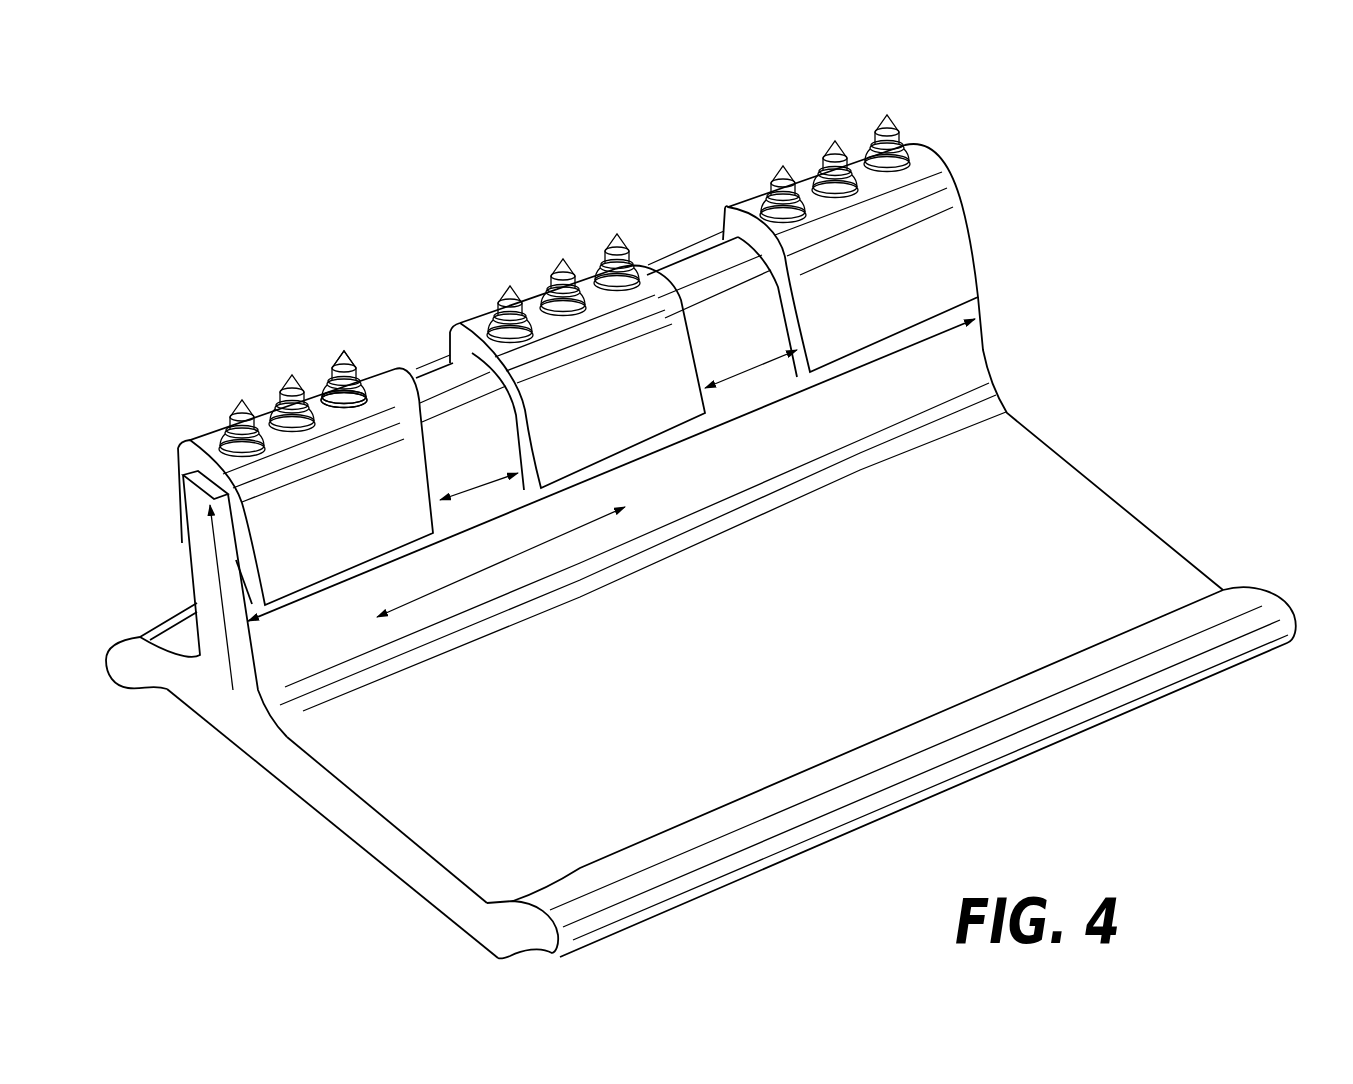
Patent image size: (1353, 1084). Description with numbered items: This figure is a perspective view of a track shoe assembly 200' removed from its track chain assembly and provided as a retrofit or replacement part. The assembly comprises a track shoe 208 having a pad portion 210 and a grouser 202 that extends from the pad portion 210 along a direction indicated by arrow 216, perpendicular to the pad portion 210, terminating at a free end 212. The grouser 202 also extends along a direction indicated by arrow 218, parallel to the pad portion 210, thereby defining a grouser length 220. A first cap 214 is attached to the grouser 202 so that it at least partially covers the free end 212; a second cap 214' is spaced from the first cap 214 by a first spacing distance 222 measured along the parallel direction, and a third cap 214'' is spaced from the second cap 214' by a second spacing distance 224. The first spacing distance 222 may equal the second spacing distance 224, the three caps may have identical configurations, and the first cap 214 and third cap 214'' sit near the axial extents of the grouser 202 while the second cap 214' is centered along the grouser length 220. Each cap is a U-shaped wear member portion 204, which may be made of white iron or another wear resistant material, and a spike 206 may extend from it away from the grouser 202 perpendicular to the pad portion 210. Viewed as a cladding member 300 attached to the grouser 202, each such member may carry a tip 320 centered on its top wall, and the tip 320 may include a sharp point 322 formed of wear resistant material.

The track shoe assembly 200' is at (690, 482).
The grouser 202 is at (975, 350).
The U-shaped wear member portion 204 is at (945, 250).
The spike 206 is at (238, 421).
The track shoe 208 is at (1080, 566).
The pad portion 210 is at (380, 850).
The free end 212 is at (438, 385).
The first cap 214 is at (850, 221).
The second cap 214' is at (577, 330).
The third cap 214'' is at (296, 435).
The arrow 216 is at (232, 663).
The arrow 218 is at (511, 562).
The grouser length 220 is at (765, 408).
The first spacing distance 222 is at (753, 366).
The second spacing distance 224 is at (462, 495).
The cladding member 300 is at (376, 396).
The tip 320 is at (347, 378).
The sharp point 322 is at (333, 385).